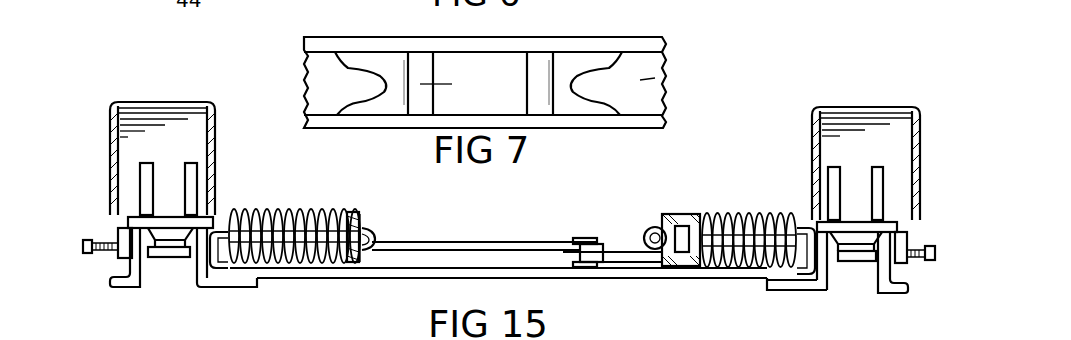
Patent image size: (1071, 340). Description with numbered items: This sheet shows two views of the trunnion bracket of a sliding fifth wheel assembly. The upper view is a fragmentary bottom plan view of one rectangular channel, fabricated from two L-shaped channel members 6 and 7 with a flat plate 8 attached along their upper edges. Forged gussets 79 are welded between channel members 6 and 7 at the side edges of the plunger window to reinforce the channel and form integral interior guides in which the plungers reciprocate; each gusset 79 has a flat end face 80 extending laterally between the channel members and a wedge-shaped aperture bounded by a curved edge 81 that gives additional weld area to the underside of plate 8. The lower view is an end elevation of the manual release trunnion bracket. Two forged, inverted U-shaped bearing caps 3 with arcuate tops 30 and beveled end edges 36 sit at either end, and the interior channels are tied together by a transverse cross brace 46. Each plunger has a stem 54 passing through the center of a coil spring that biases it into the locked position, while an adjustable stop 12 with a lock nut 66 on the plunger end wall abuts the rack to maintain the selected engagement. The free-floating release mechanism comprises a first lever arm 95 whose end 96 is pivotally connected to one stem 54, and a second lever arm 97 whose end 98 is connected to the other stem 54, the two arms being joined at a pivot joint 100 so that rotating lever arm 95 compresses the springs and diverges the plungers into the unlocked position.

In FIG. 15, the bearing cap 3 is at (110, 98).
In FIG. 7, the L-shaped channel member 6 is at (618, 124).
In FIG. 7, the L-shaped channel member 7 is at (605, 44).
In FIG. 7, the flat plate 8 is at (655, 78).
In FIG. 15, the adjustable stop 12 is at (110, 252).
In FIG. 15, the arcuately-shaped top 30 is at (160, 102).
In FIG. 15, the end edge 36 is at (915, 107).
In FIG. 15, the transverse cross brace 46 is at (678, 280).
In FIG. 15, the stem 54 is at (310, 224).
In FIG. 15, the lock nut 66 is at (912, 260).
In FIG. 7, the gusset 79 is at (423, 60).
In FIG. 7, the end face 80 is at (451, 74).
In FIG. 7, the edge 81 is at (362, 74).
In FIG. 15, the first lever arm 95 is at (612, 250).
In FIG. 15, the end 96 is at (668, 268).
In FIG. 15, the second lever arm 97 is at (494, 240).
In FIG. 15, the end 98 is at (370, 250).
In FIG. 15, the pivot joint 100 is at (580, 238).